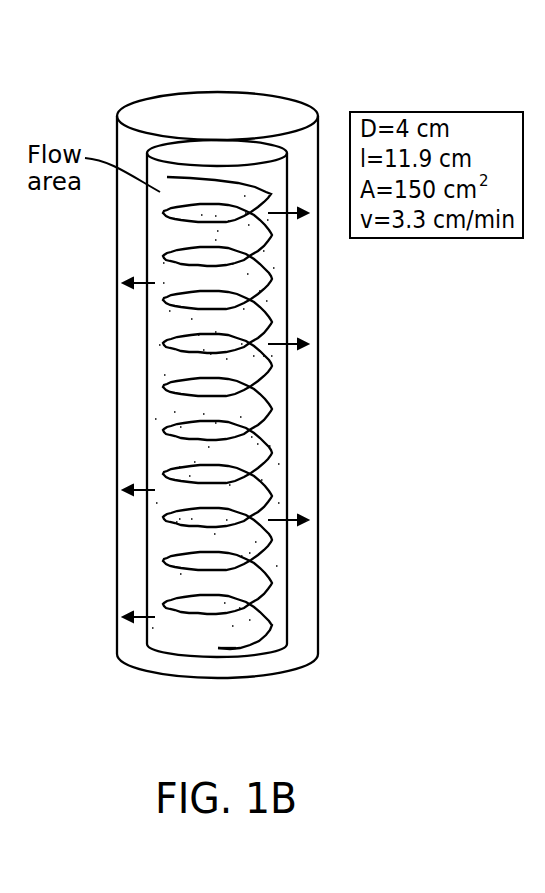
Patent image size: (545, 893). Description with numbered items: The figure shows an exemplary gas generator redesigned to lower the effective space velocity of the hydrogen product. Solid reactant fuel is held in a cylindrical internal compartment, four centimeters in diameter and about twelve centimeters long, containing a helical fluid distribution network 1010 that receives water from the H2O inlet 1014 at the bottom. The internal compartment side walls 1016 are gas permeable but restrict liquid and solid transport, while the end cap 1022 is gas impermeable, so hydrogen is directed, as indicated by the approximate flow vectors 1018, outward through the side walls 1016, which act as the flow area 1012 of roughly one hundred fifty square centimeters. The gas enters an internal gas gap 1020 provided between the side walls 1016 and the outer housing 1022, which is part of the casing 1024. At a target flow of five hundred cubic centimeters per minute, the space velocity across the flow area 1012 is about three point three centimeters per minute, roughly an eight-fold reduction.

The fluid distribution network 1010 is at (268, 278).
The flow area 1012 is at (288, 551).
The H2O inlet 1014 is at (230, 648).
The internal compartment side walls 1016 is at (288, 591).
The flow arrows (approximate flow vectors) 1018 is at (280, 348).
The internal gas gap 1020 is at (125, 375).
The outer housing / end cap 1022 is at (272, 150).
The casing 1024 is at (217, 92).